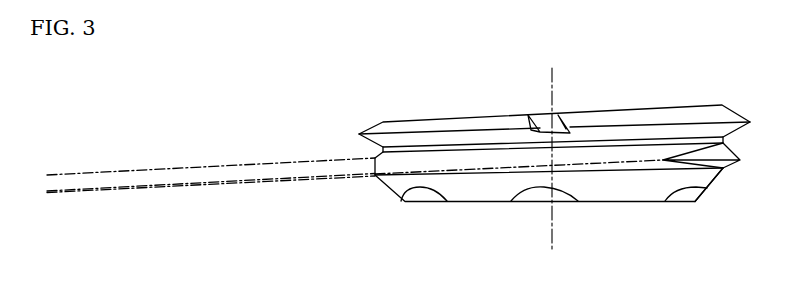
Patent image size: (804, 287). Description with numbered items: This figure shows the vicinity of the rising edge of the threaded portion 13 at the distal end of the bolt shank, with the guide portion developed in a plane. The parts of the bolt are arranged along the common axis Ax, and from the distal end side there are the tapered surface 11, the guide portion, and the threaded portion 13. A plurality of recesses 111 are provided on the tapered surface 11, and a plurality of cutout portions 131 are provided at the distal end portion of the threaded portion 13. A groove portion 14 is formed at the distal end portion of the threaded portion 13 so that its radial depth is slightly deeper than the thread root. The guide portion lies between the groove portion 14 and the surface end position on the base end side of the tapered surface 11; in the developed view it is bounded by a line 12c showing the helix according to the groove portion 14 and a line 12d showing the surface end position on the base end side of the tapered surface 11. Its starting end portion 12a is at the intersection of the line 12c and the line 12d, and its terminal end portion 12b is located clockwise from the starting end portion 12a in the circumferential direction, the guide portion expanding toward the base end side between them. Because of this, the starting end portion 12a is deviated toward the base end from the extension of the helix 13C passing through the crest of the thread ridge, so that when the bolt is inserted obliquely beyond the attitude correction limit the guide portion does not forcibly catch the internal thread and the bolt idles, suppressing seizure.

The tapered surface 11 is at (478, 192).
The recess 111 is at (571, 193).
The starting end portion 12a is at (47, 174).
The terminal end portion 12b is at (698, 172).
The line showing a helix according to the groove portion 12c is at (316, 161).
The line showing the surface end position on the base end side of the tapered surfac 12d is at (244, 183).
The threaded portion 13 is at (410, 124).
The cutout portion 131 is at (539, 119).
The helix 13C is at (106, 194).
The groove portion 14 is at (726, 134).
The axis Ax is at (555, 147).